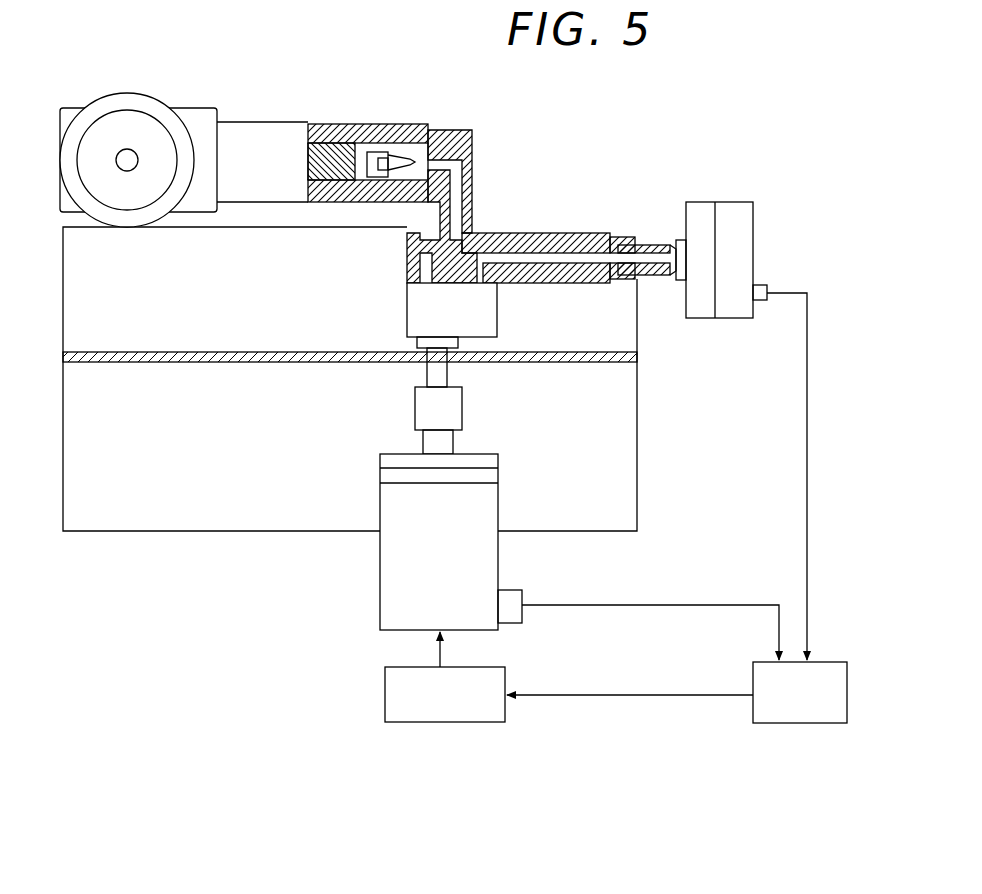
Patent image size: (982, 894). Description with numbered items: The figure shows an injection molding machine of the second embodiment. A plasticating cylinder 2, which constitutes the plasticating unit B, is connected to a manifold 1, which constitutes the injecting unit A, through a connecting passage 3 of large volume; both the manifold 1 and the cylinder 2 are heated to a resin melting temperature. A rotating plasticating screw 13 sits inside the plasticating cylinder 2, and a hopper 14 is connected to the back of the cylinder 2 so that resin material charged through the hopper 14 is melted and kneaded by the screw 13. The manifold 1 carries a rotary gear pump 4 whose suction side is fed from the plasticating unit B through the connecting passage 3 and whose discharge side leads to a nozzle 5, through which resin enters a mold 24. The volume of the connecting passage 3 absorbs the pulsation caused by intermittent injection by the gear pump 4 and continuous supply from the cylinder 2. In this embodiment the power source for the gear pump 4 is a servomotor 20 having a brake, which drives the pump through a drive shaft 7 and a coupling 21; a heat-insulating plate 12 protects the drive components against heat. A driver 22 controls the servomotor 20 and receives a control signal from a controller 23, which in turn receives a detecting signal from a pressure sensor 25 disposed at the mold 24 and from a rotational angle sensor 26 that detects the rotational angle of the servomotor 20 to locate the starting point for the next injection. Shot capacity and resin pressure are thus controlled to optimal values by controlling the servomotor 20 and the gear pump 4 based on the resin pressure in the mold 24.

The manifold 1 is at (533, 232).
The plasticating cylinder 2 is at (388, 125).
The connecting passage 3 is at (472, 176).
The rotary pump 4 is at (497, 300).
The nozzle 5 is at (647, 240).
The drive shaft 7 is at (448, 372).
The heat-insulating plate 12 is at (178, 352).
The plasticating screw 13 is at (333, 150).
The hopper 14 is at (112, 96).
The servomotor 20 is at (383, 577).
The coupling 21 is at (415, 405).
The driver 22 is at (393, 723).
The controller 23 is at (757, 723).
The mold 24 is at (706, 203).
The pressure sensor 25 is at (768, 288).
The rotational angle sensor 26 is at (522, 596).
The injecting unit A is at (594, 212).
The plasticating unit B is at (270, 114).